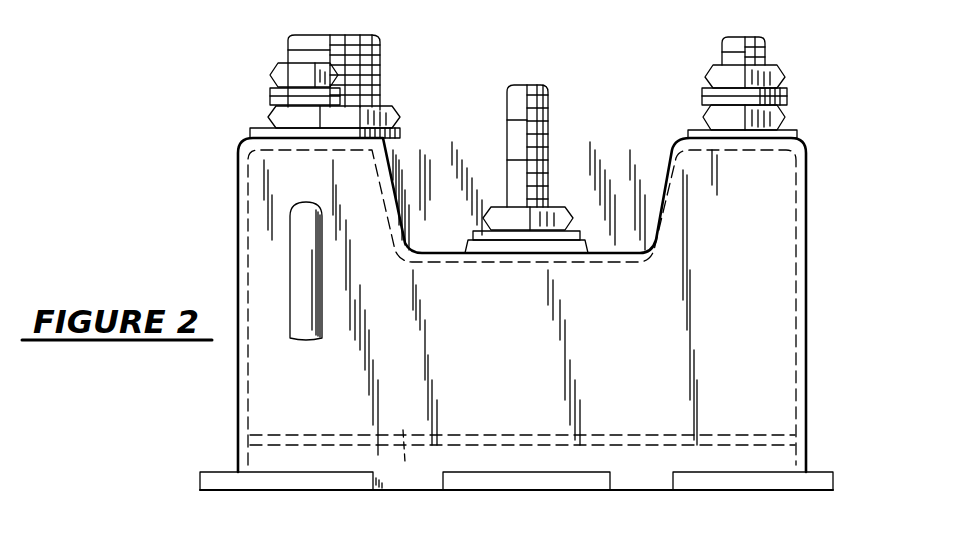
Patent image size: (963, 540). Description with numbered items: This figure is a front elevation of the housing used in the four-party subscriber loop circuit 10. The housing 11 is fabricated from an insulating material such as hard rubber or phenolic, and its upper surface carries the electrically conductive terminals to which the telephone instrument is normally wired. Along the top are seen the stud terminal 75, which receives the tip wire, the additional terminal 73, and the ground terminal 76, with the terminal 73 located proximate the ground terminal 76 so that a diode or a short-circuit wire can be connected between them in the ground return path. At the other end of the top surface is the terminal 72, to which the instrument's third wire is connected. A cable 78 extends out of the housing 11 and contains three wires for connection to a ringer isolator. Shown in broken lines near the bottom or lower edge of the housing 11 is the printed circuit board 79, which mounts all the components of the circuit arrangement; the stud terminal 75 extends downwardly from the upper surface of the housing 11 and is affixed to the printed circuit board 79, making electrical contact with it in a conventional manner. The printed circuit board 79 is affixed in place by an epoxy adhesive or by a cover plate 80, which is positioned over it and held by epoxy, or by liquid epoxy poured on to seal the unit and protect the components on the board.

The four-party subscriber loop circuit 10 is at (218, 147).
The housing 11 is at (255, 195).
The terminal 72 is at (757, 46).
The terminal 73 is at (400, 38).
The stud terminal 75 is at (300, 44).
The ground terminal 76 is at (545, 88).
The cable 78 is at (300, 288).
The printed circuit board 79 is at (283, 432).
The cover plate 80 is at (408, 430).